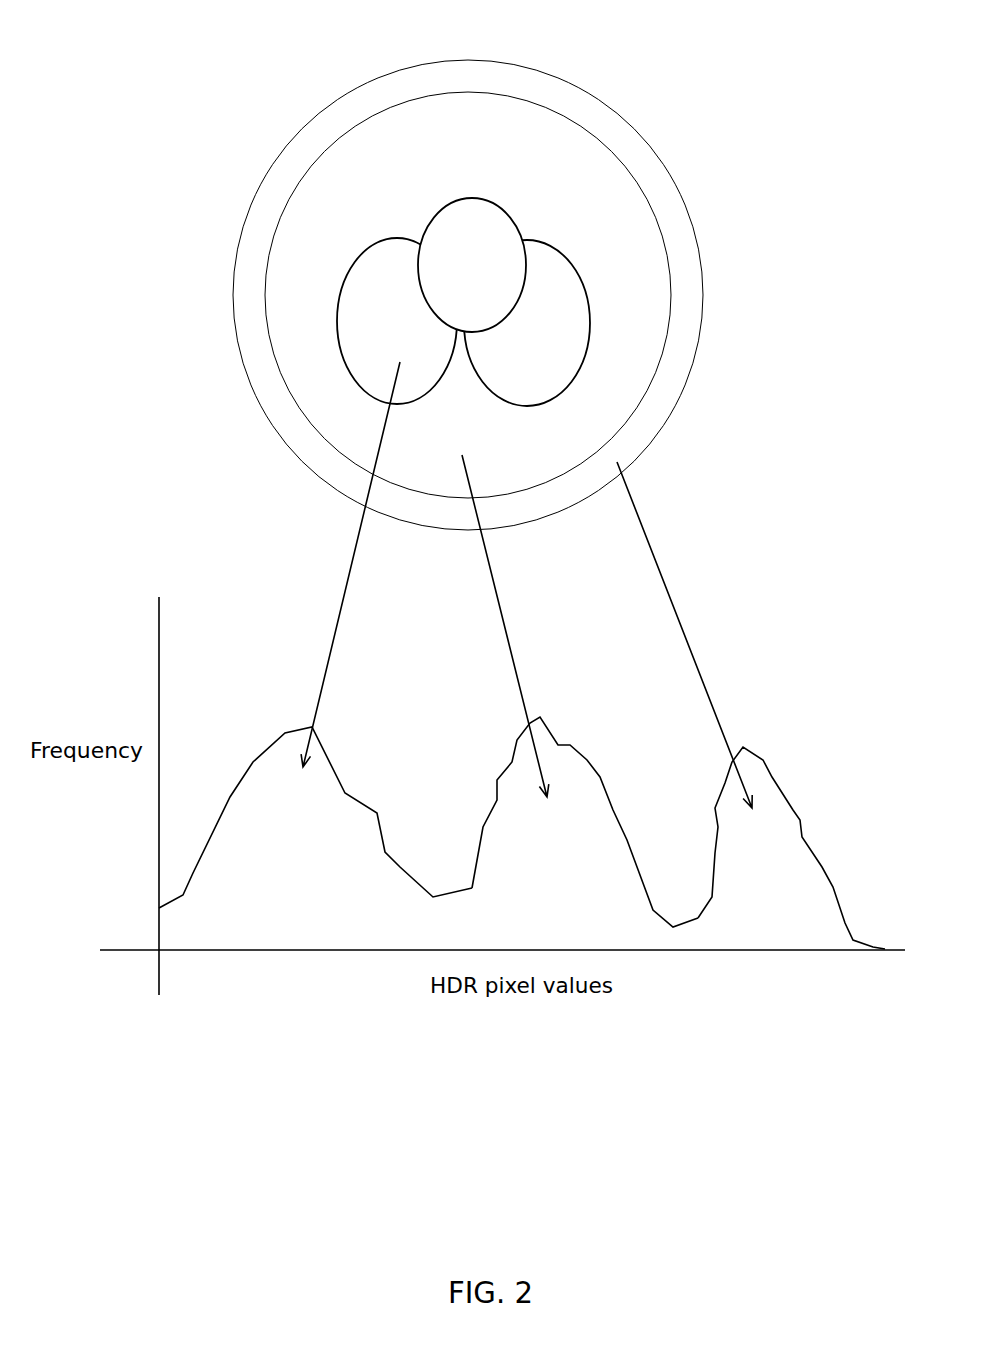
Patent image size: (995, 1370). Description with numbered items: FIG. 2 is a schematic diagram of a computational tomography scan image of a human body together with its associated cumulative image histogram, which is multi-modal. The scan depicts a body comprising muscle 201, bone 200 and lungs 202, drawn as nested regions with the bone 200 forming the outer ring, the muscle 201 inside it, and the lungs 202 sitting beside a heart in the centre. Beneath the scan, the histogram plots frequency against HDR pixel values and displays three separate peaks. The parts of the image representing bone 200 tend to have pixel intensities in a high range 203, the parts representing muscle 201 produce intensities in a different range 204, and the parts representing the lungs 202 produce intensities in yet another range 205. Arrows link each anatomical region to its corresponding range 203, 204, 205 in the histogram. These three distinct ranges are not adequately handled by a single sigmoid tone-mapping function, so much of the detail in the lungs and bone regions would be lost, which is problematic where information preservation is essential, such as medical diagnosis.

The bone 200 is at (675, 217).
The muscle 201 is at (548, 143).
The lungs 202 is at (367, 341).
The high range 203 is at (775, 825).
The different range 204 is at (577, 827).
The range 205 is at (322, 825).